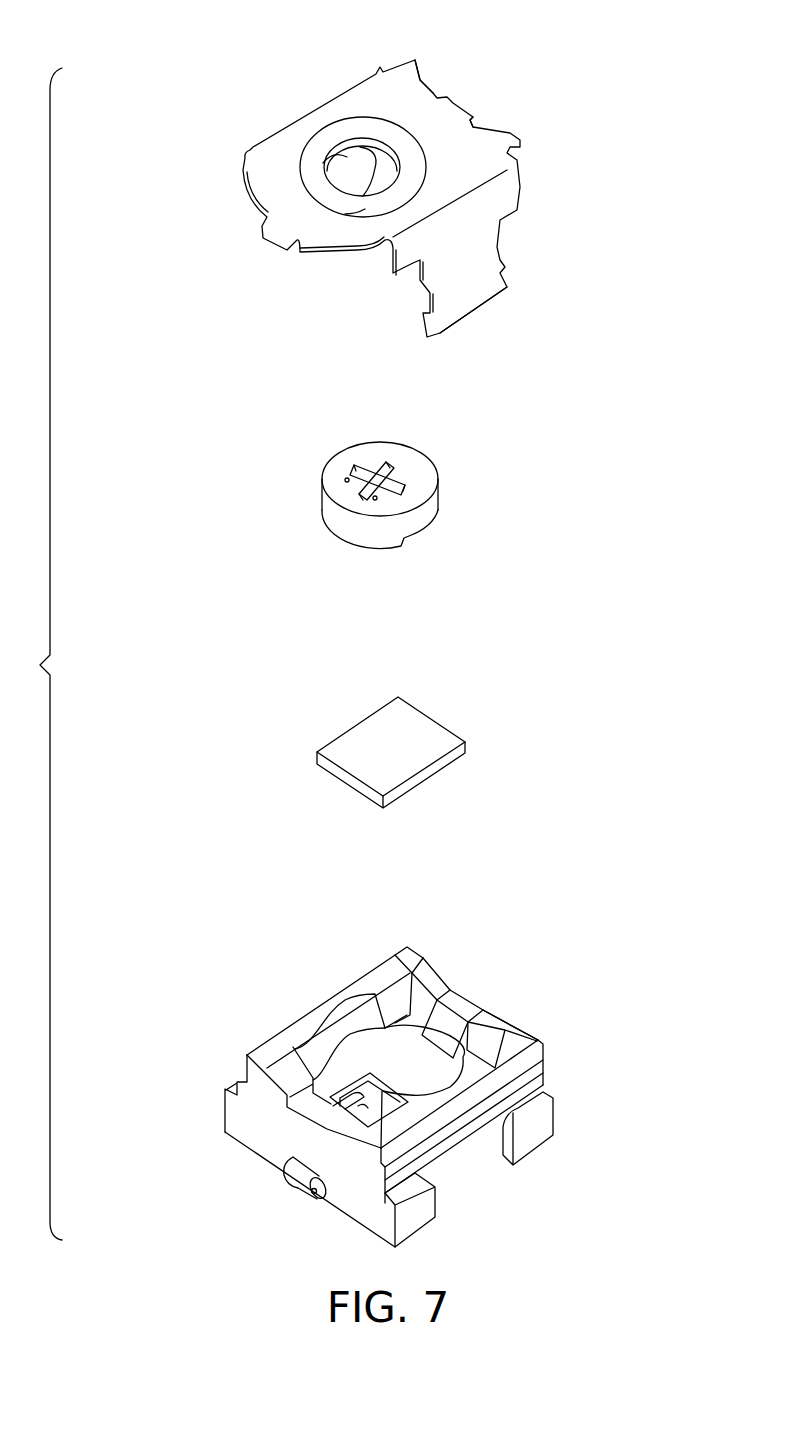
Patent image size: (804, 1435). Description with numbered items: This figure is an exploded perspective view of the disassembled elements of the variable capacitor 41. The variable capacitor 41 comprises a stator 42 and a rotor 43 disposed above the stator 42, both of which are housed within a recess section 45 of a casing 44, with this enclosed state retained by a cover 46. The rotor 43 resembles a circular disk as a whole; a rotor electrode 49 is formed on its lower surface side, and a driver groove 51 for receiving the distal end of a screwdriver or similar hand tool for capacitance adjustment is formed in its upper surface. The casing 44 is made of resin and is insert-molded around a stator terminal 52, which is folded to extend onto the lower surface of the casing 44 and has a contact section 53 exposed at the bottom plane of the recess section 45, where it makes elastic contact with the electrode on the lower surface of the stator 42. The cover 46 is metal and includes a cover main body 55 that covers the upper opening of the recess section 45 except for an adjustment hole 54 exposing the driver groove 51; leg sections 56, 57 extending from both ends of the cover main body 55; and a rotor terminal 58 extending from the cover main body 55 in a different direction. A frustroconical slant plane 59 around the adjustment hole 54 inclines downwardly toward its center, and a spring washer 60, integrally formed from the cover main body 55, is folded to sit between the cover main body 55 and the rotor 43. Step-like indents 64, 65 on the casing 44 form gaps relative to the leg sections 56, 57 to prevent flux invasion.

The variable capacitor 41 is at (82, 152).
The stator 42 is at (300, 752).
The rotor 43 is at (348, 487).
The casing 44 is at (395, 1083).
The recess section 45 is at (370, 1038).
The cover 46 is at (232, 107).
The rotor electrode 49 is at (400, 542).
The driver groove 51 is at (358, 463).
The stator terminal 52 is at (298, 1178).
The contact section 53 is at (345, 1100).
The adjustment hole 54 is at (338, 135).
The cover main body 55 is at (415, 87).
The leg section 56 is at (487, 290).
The leg section 57 is at (355, 168).
The rotor terminal 58 is at (482, 127).
The frustroconical slant plane 59 is at (357, 208).
The spring washer 60 is at (323, 162).
The step-like indent 64 is at (538, 1063).
The step-like indent 65 is at (237, 1080).